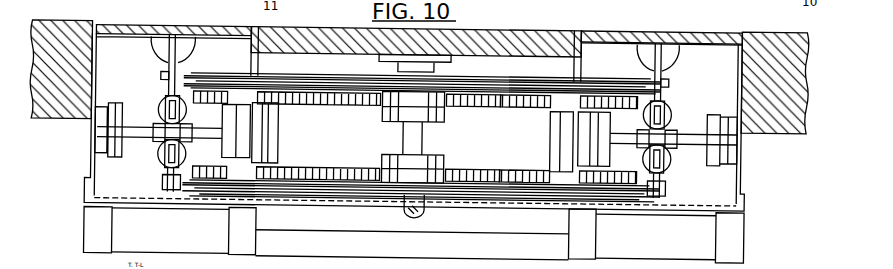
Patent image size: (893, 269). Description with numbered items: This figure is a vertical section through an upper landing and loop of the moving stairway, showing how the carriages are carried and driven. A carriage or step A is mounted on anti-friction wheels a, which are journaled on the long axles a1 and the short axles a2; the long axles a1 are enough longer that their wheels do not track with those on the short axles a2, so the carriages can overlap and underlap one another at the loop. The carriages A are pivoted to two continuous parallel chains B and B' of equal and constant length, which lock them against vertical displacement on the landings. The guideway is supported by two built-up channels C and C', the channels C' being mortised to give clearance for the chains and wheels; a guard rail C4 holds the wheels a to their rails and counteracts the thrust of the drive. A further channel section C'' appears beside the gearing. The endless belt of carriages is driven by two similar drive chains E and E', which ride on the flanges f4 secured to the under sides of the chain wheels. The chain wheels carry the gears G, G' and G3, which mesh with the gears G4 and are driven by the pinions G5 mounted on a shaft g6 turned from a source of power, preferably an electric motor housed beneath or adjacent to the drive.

The carriage or step A is at (419, 40).
The built-up channel C is at (410, 117).
The guard rail C4 is at (109, 109).
The parallel chain B is at (407, 82).
The parallel chain B' is at (397, 168).
The anti-friction device or wheel a is at (417, 125).
The long axle a1 is at (192, 146).
The short axle a2 is at (677, 146).
The built-up channel C' is at (281, 133).
The sliding block C'' is at (551, 141).
The drive chain E is at (422, 74).
The drive chain E' is at (420, 203).
The flange f4 is at (504, 90).
The gear G is at (524, 169).
The gear G' is at (525, 111).
The gear G3 is at (318, 136).
The gear G4 is at (345, 107).
The pinion G5 is at (446, 108).
The pinion shaft g6 is at (423, 138).